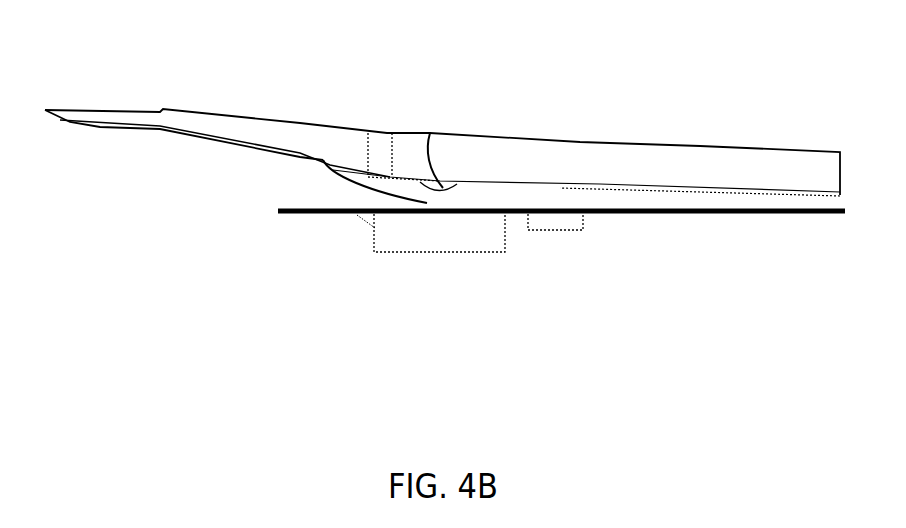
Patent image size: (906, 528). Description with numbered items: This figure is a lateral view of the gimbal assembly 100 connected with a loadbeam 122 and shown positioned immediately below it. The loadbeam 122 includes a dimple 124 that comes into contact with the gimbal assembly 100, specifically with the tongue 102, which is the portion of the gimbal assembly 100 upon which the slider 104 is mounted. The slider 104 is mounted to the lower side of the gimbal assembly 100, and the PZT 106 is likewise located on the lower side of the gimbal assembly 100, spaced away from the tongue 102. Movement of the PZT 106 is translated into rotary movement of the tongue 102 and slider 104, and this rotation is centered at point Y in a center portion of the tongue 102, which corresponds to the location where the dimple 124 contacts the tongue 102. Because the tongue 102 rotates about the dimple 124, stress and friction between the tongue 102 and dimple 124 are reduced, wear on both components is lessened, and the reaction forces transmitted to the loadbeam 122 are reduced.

The gimbal assembly 100 is at (290, 222).
The tongue 102 is at (403, 214).
The slider 104 is at (425, 230).
The PZT 106 is at (562, 228).
The loadbeam 122 is at (712, 168).
The dimple 124 is at (430, 133).
The point Y is at (323, 160).